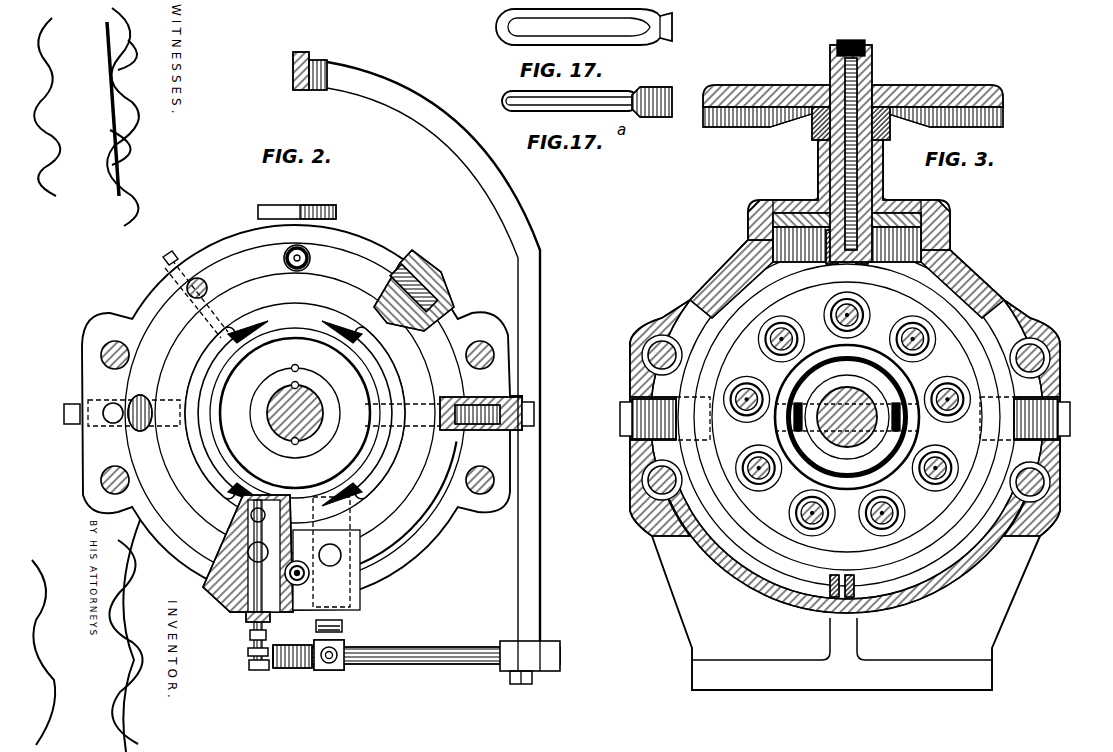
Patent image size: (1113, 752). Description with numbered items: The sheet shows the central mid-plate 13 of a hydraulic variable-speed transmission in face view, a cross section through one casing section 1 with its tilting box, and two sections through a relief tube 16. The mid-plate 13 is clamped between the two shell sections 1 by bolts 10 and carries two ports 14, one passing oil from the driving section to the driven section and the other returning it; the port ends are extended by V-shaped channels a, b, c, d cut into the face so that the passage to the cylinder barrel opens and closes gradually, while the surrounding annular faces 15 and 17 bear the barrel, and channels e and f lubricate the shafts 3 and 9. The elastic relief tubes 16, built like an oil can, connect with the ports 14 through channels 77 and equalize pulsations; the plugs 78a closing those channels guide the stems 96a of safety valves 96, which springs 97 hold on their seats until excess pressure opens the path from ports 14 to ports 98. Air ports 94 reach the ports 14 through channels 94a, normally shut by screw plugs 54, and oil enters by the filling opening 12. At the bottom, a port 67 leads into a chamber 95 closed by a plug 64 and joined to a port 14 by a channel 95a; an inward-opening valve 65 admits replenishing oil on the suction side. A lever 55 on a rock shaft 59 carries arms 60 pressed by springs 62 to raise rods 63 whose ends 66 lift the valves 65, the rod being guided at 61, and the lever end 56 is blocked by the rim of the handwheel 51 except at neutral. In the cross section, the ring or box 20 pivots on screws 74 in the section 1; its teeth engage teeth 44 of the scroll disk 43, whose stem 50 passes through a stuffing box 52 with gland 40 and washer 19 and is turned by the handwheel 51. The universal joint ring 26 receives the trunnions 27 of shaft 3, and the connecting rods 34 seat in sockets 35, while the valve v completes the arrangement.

In FIG. 3, the casing section 1 is at (708, 290).
In FIG. 3, the shaft 3 is at (847, 417).
In FIG. 2, the shaft 9 is at (295, 413).
In FIG. 3, the shaft 9 is at (826, 311).
In FIG. 2, the bolts 10 is at (100, 353).
In FIG. 3, the bolts 10 is at (630, 355).
In FIG. 2, the filling opening 12 is at (297, 203).
In FIG. 2, the mid-plate 13 is at (398, 262).
In FIG. 2, the ports 14 is at (296, 413).
In FIG. 2, the annular chamber 15 is at (295, 413).
In FIG. 17, the relief tubes 16 is at (570, 27).
In FIG. 17A, the relief tubes 16 is at (570, 102).
In FIG. 2, the relief tubes 16 is at (139, 395).
In FIG. 2, the valve 17 is at (310, 258).
In FIG. 3, the gland washer 19 is at (862, 262).
In FIG. 3, the ring or box 20 is at (752, 322).
In FIG. 3, the universal joint ring 26 is at (905, 392).
In FIG. 3, the trunnions 27 is at (804, 405).
In FIG. 3, the connecting rods 34 is at (928, 345).
In FIG. 3, the sockets 35 is at (900, 322).
In FIG. 3, the gland ring bolts 40 is at (847, 412).
In FIG. 3, the scroll disk 43 is at (797, 212).
In FIG. 3, the teeth 44 is at (748, 218).
In FIG. 3, the stem 50 is at (873, 68).
In FIG. 3, the handwheel 51 is at (914, 100).
In FIG. 3, the stuffing box 52 is at (890, 130).
In FIG. 2, the screw plugs 54 is at (164, 259).
In FIG. 2, the lever 55 is at (538, 244).
In FIG. 2, the lever end 56 is at (296, 71).
In FIG. 2, the rock shaft 59 is at (416, 647).
In FIG. 2, the arms 60 is at (295, 596).
In FIG. 2, the clamp 61 is at (292, 667).
In FIG. 2, the springs 62 is at (250, 635).
In FIG. 2, the rods 63 is at (248, 652).
In FIG. 2, the plug 64 is at (246, 617).
In FIG. 2, the valve 65 is at (250, 512).
In FIG. 2, the rod ends 66 is at (326, 553).
In FIG. 2, the port 67 is at (248, 552).
In FIG. 3, the screws 74 is at (620, 416).
In FIG. 2, the channels 77 is at (418, 408).
In FIG. 2, the plugs 78a is at (534, 410).
In FIG. 2, the ports 94 is at (207, 287).
In FIG. 2, the channels 94a is at (262, 305).
In FIG. 2, the chamber 95 is at (206, 588).
In FIG. 2, the channel 95a is at (384, 510).
In FIG. 2, the safety valves 96 is at (458, 398).
In FIG. 2, the stems 96a is at (492, 397).
In FIG. 2, the springs 97 is at (480, 470).
In FIG. 2, the ports 98 is at (112, 402).
In FIG. 2, the V-shaped channel a is at (226, 404).
In FIG. 2, the V-shaped channel b is at (363, 404).
In FIG. 2, the V-shaped channel c is at (245, 493).
In FIG. 2, the V-shaped channel d is at (346, 493).
In FIG. 2, the channel e is at (294, 406).
In FIG. 2, the channel f is at (294, 360).
In FIG. 2, the valve v is at (301, 423).